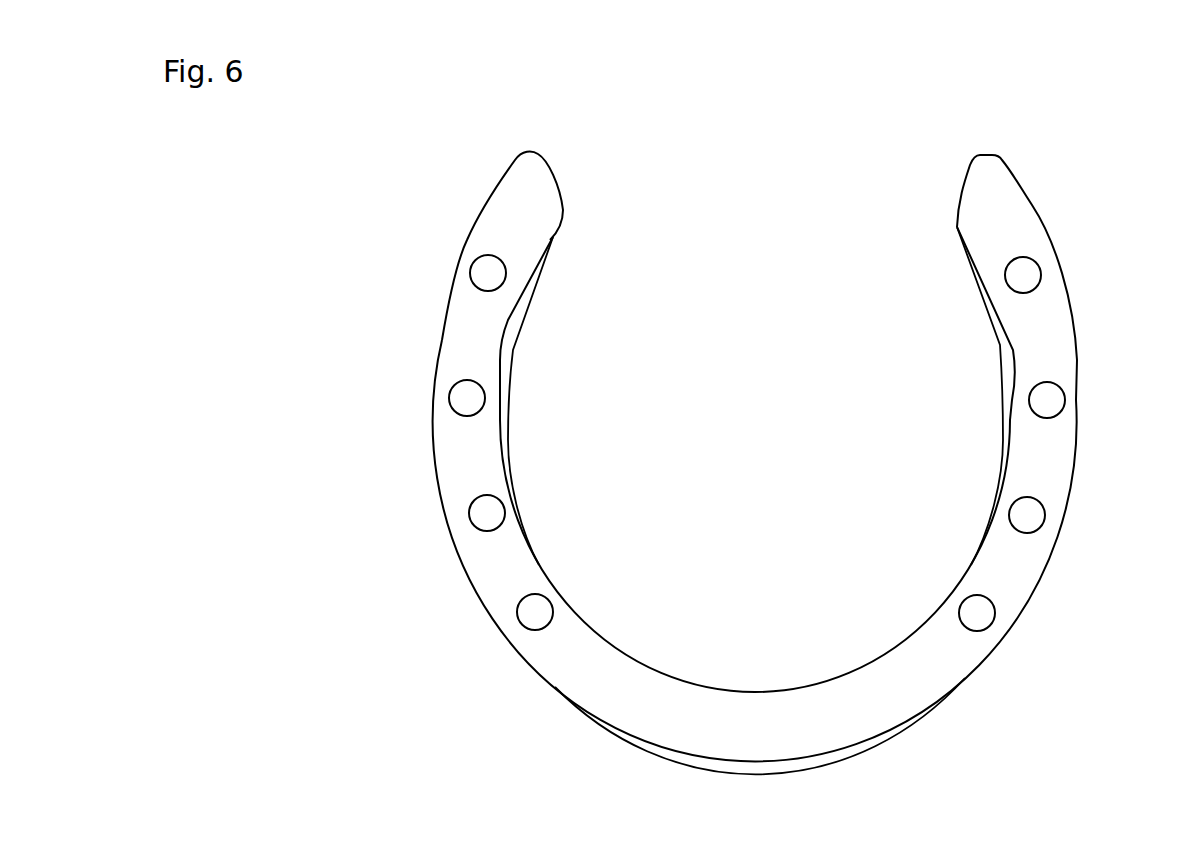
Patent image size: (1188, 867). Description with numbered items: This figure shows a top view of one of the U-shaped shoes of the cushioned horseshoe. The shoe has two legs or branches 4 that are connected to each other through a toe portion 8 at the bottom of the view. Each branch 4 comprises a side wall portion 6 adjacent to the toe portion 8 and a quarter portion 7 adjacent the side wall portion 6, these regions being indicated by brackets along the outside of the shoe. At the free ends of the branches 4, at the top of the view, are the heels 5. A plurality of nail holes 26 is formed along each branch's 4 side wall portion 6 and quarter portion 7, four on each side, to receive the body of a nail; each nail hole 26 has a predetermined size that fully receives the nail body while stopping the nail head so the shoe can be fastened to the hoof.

The branch 4 is at (567, 763).
The heel 5 is at (542, 197).
The side wall portion 6 is at (590, 727).
The quarter portion 7 is at (458, 590).
The toe portion 8 is at (593, 733).
The nail holes 26 is at (476, 400).